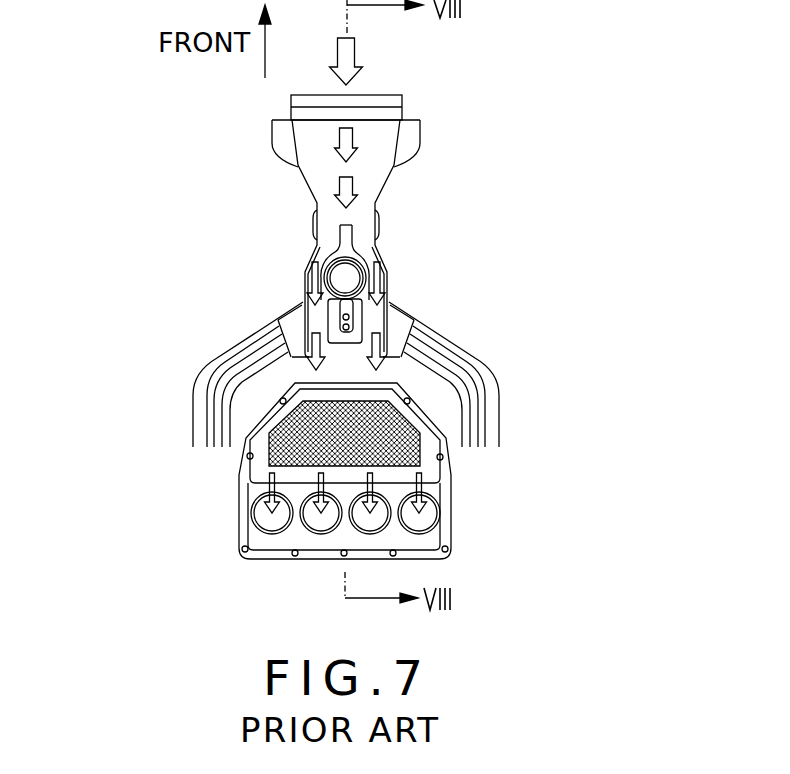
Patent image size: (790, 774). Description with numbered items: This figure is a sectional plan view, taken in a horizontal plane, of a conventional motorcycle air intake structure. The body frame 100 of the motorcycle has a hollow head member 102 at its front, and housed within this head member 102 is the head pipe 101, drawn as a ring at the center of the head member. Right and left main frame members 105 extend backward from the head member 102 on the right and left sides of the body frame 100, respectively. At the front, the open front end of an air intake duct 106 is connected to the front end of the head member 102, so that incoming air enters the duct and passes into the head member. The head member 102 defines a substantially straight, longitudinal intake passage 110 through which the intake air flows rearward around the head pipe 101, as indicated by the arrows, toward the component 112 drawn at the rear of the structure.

The body frame 100 is at (194, 362).
The head pipe 101 is at (356, 281).
The head member 102 is at (303, 284).
The main frame members 105 is at (193, 423).
The air intake duct 106 is at (298, 168).
The intake passage 110 is at (361, 239).
The throttle bodies 112 is at (233, 522).